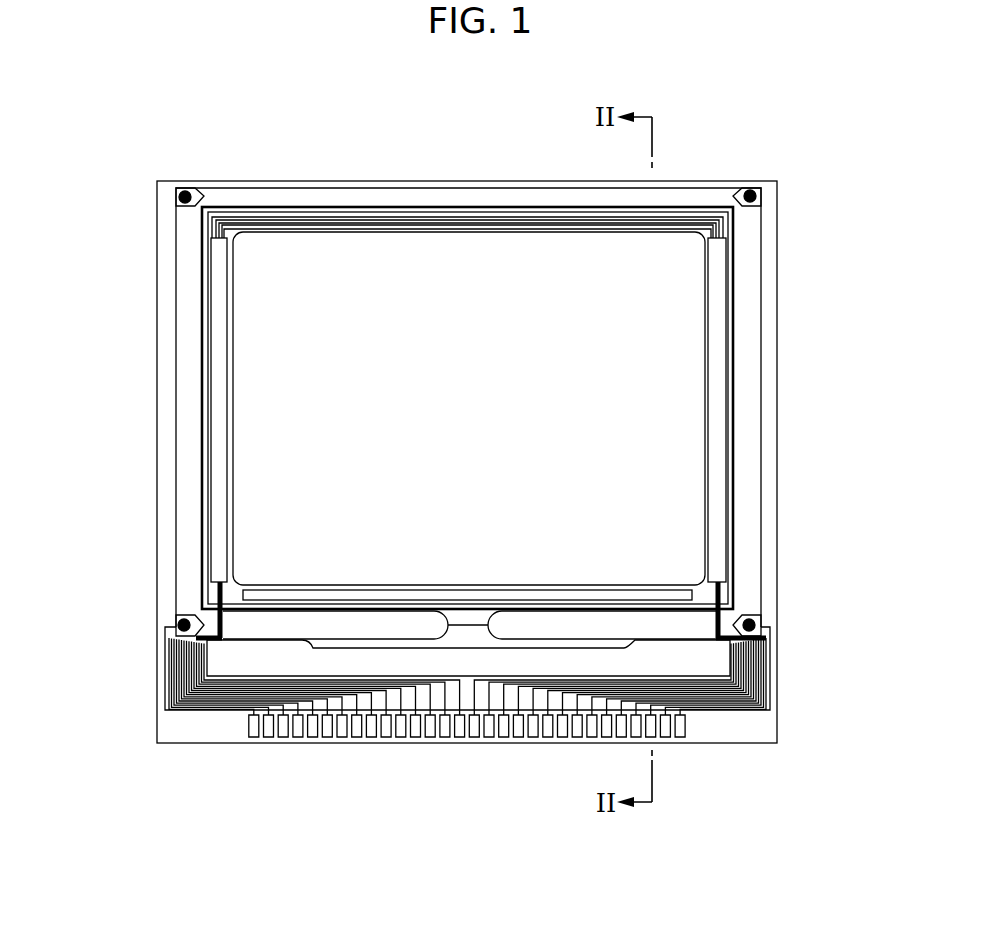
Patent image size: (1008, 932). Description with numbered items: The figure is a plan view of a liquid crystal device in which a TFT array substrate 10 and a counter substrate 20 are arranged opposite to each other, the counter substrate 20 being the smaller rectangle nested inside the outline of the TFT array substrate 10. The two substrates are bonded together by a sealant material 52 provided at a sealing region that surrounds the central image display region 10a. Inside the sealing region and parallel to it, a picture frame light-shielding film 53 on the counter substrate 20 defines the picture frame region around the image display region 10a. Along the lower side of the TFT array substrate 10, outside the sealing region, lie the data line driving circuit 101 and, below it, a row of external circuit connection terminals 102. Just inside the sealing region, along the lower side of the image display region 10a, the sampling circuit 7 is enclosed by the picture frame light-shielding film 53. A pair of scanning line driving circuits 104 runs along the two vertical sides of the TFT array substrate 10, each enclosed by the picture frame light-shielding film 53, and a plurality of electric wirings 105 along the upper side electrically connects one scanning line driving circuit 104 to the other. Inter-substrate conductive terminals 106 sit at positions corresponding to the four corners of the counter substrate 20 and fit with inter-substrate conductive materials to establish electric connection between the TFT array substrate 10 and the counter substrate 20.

The TFT array substrate 10 is at (287, 180).
The image display region 10a is at (277, 362).
The counter substrate 20 is at (490, 188).
The sealant material 52 is at (748, 340).
The electric wirings 105 is at (392, 226).
The scanning line driving circuit 104 is at (718, 410).
The sampling circuit 7 is at (323, 593).
The picture frame light-shielding film 53 is at (708, 593).
The data line driving circuit 101 is at (232, 667).
The external circuit connection terminals 102 is at (431, 722).
The inter-substrate conductive terminals 106 is at (197, 197).